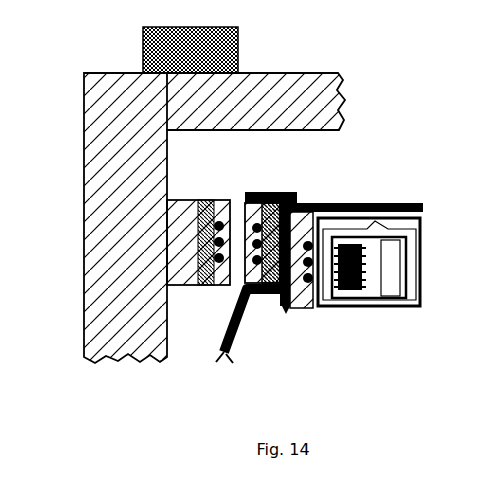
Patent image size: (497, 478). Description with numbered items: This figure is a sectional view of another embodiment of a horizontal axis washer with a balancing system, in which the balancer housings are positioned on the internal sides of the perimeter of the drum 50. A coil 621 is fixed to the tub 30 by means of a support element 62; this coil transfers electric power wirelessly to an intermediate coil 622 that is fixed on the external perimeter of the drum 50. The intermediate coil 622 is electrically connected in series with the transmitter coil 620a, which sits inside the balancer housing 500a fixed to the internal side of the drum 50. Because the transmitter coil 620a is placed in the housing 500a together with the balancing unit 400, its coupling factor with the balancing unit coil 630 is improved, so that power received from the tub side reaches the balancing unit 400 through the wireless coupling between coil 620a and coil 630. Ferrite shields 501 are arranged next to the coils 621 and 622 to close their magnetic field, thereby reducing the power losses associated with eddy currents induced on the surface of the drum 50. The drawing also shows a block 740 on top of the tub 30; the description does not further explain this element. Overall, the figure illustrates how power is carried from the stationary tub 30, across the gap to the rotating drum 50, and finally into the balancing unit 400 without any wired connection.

The tub 30 is at (346, 85).
The magnet block 740 is at (239, 36).
The support element 62 is at (222, 178).
The coil 621 is at (220, 288).
The intermediate coil 622 is at (243, 232).
The transmitter coil 620a is at (306, 300).
The ferrite shield 501 is at (211, 200).
The balancer housing 500a is at (408, 205).
The balancing unit 400 is at (422, 276).
The balancing unit coil 630 is at (366, 285).
The drum 50 is at (218, 352).